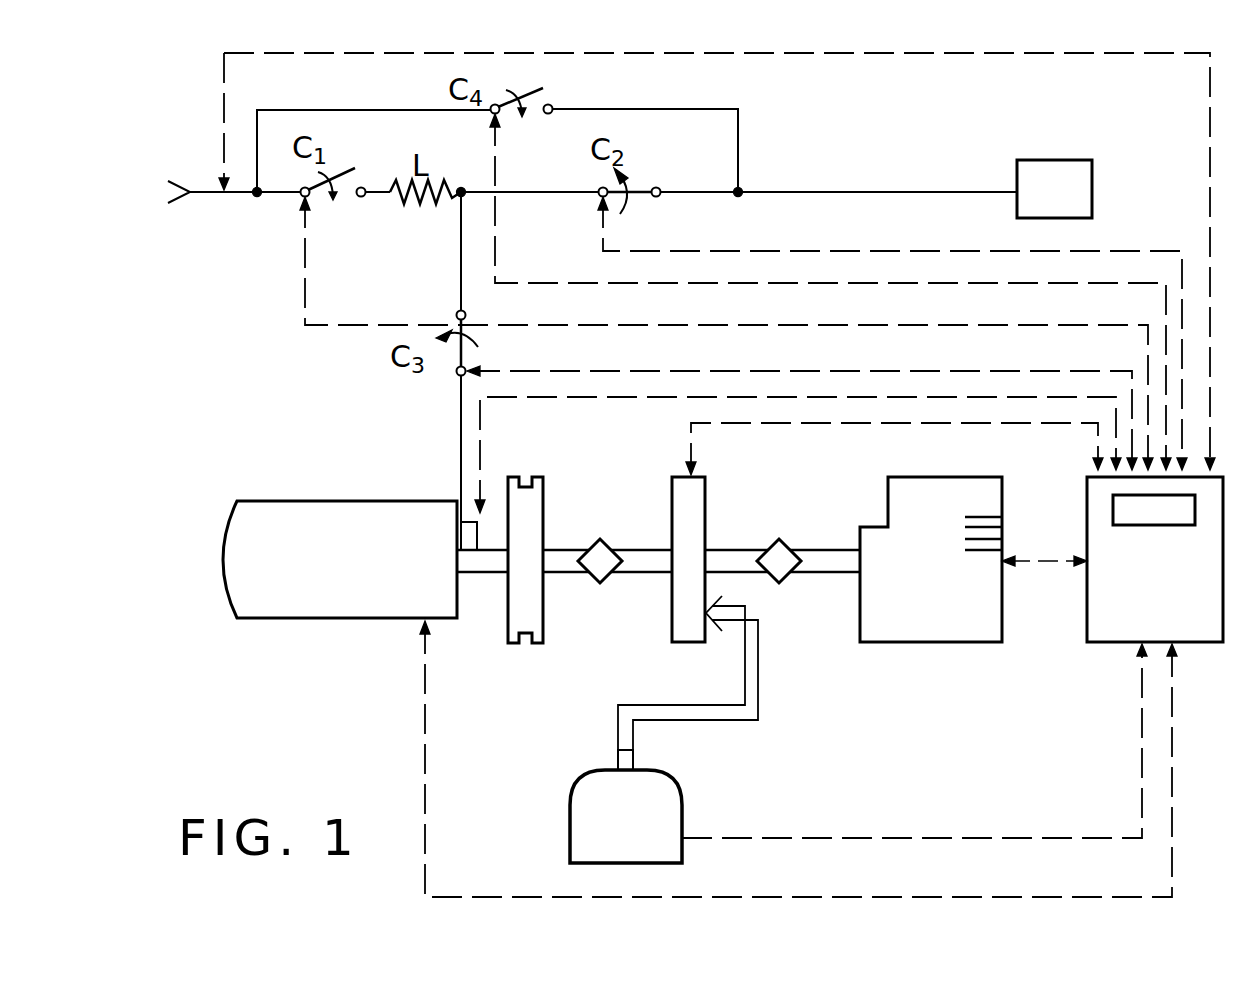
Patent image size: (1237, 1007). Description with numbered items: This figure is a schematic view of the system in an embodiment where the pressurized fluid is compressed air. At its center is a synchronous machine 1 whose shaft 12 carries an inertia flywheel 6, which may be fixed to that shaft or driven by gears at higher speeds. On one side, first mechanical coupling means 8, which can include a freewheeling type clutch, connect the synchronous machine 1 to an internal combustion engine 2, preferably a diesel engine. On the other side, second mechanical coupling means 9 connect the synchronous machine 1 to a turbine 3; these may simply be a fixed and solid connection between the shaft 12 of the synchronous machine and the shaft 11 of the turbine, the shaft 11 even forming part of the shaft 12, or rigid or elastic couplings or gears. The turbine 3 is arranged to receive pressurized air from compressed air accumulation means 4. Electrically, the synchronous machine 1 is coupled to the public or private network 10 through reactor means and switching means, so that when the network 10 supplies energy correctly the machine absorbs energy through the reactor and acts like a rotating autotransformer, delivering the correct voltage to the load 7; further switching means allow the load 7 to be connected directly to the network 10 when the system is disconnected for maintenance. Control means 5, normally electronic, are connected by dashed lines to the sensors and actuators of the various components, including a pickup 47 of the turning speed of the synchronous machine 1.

The synchronous machine 1 is at (340, 559).
The internal combustion engine 2 is at (931, 559).
The turbine 3 is at (688, 559).
The compressed air accumulation means 4 is at (664, 729).
The control means 5 is at (1155, 559).
The inertia flywheel 6 is at (525, 560).
The load 7 is at (1054, 189).
The first mechanical coupling means 8 is at (779, 561).
The second mechanical coupling means 9 is at (600, 561).
The network 10 is at (225, 170).
The shaft of the turbine 11 is at (648, 550).
The shaft of the synchronous machine 12 is at (481, 575).
The pickup of the turning speed 47 is at (462, 520).